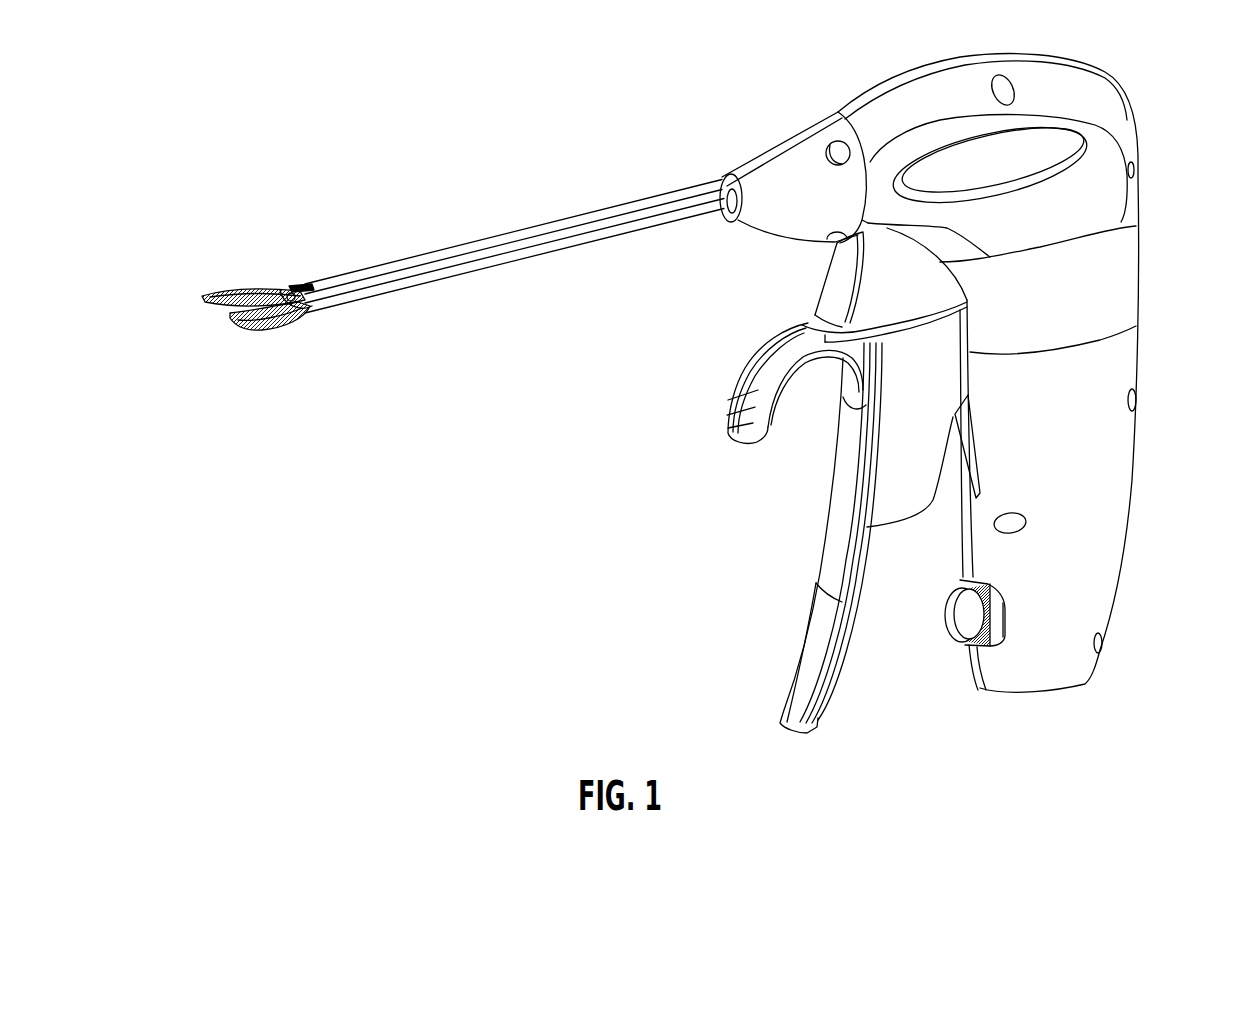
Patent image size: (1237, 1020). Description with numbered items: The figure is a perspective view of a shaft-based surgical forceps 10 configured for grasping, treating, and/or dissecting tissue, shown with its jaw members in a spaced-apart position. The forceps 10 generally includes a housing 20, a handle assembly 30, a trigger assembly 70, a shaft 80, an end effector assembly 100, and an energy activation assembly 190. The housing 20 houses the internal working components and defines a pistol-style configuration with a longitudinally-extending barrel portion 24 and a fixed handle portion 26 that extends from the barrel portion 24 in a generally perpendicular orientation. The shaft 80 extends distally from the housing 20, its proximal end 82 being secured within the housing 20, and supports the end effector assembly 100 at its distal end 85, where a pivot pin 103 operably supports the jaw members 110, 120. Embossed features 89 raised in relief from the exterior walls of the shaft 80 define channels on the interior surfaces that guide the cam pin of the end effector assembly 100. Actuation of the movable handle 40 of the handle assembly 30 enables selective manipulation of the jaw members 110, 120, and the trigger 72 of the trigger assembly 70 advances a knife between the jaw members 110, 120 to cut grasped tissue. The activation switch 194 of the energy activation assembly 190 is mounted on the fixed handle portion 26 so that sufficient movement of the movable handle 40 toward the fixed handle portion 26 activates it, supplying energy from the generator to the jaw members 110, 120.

The forceps 10 is at (708, 92).
The housing 20 is at (1131, 93).
The barrel portion 24 is at (948, 85).
The fixed handle portion 26 is at (1103, 583).
The handle assembly 30 is at (1087, 723).
The movable handle 40 is at (838, 545).
The trigger assembly 70 is at (802, 260).
The trigger 72 is at (838, 295).
The shaft 80 is at (533, 258).
The proximal end 82 is at (716, 188).
The distal end 85 is at (333, 303).
The embossed features 89 is at (308, 285).
The end effector assembly 100 is at (334, 236).
The pivot pin 103 is at (292, 288).
The jaw member 110 is at (202, 302).
The jaw member 120 is at (232, 318).
The energy activation assembly 190 is at (952, 660).
The activation switch 194 is at (957, 612).